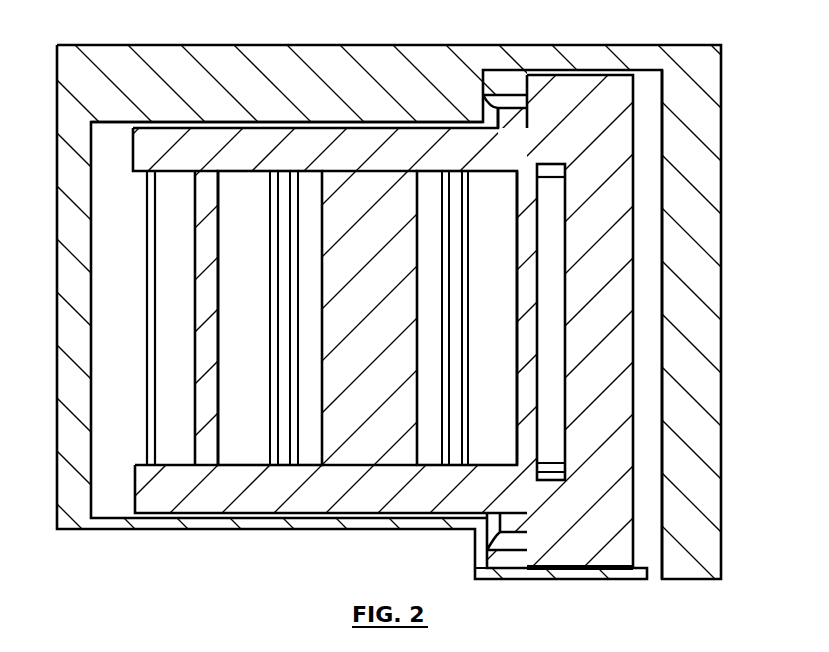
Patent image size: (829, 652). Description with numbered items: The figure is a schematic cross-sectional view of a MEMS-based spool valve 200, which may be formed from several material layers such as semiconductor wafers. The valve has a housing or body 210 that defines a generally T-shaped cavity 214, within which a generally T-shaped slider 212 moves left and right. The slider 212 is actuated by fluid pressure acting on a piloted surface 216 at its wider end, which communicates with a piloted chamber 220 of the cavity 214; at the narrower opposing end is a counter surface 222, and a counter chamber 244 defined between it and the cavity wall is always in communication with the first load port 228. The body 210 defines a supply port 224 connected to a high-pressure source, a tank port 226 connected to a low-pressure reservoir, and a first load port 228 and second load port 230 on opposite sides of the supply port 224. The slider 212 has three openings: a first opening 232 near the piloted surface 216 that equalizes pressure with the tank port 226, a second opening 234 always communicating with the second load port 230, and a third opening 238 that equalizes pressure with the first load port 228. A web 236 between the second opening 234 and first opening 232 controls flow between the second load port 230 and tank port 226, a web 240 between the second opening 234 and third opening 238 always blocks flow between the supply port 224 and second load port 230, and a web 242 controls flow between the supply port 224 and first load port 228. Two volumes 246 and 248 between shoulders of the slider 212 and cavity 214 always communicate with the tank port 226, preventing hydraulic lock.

The MEMS-based spool valve 200 is at (300, 540).
The body 210 is at (141, 86).
The slider 212 is at (611, 128).
The cavity 214 is at (643, 95).
The piloted surface 216 is at (635, 193).
The piloted chamber 220 is at (660, 547).
The counter surface 222 is at (193, 316).
The supply port 224 is at (283, 198).
The tank port 226 is at (565, 218).
The first load port 228 is at (196, 410).
The second load port 230 is at (462, 300).
The first opening 232 is at (562, 452).
The second opening 234 is at (515, 190).
The web 236 is at (525, 298).
The third opening 238 is at (257, 177).
The web 240 is at (348, 122).
The web 242 is at (208, 394).
The counter chamber 244 is at (91, 322).
The volume 246 is at (520, 535).
The volume 248 is at (512, 110).